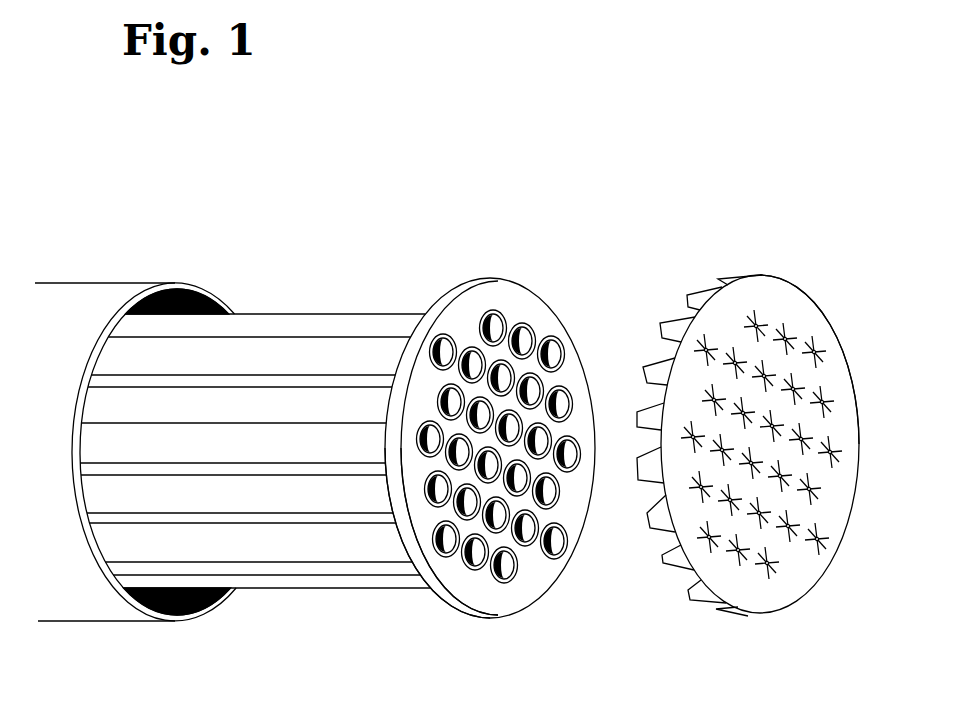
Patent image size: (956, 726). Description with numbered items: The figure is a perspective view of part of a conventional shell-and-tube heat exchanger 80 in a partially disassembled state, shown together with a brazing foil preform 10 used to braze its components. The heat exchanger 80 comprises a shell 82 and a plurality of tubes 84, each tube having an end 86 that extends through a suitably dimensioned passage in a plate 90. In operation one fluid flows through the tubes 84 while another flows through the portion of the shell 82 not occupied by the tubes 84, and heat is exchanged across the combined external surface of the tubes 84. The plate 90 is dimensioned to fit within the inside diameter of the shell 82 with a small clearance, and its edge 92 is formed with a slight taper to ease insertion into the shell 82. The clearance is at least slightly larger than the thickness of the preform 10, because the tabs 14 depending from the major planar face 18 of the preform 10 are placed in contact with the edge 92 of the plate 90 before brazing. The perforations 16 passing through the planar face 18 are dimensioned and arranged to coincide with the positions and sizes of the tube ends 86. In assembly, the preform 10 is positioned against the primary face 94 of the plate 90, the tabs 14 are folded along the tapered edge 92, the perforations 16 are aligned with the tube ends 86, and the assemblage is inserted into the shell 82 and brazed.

The brazing foil preform 10 is at (817, 602).
The tabs 14 is at (705, 290).
The perforations 16 is at (823, 390).
The major planar face 18 is at (793, 308).
The heat exchanger 80 is at (210, 277).
The shell 82 is at (70, 603).
The tubes 84 is at (252, 350).
The tube ends 86 is at (555, 335).
The plate 90 is at (465, 318).
The edge 92 is at (447, 598).
The primary face 94 is at (510, 598).